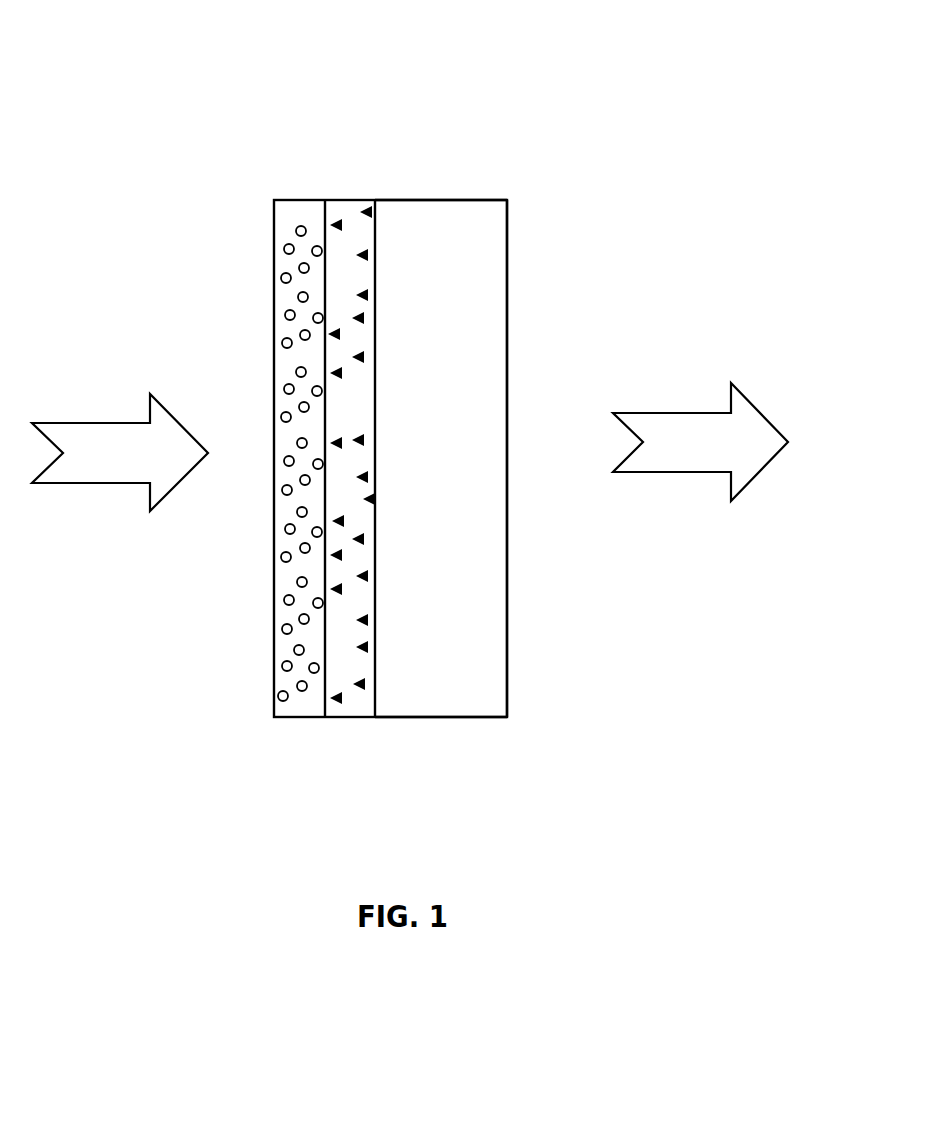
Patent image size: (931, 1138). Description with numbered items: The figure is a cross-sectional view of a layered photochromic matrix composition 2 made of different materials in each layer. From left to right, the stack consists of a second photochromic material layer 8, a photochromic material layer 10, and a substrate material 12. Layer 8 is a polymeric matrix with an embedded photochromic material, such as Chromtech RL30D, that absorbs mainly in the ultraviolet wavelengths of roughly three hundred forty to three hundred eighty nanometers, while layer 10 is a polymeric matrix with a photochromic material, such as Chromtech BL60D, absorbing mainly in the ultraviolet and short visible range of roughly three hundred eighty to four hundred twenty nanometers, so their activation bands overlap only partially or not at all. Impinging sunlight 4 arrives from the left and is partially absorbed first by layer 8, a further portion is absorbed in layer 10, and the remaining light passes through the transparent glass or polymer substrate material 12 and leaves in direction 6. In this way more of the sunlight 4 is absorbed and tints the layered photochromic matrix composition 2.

The layered photochromic matrix composition 2 is at (540, 88).
The impinging sunlight 4 is at (120, 452).
The direction 6 is at (700, 442).
The second photochromic material layer 8 is at (298, 708).
The photochromic material layer 10 is at (349, 708).
The substrate material 12 is at (437, 708).